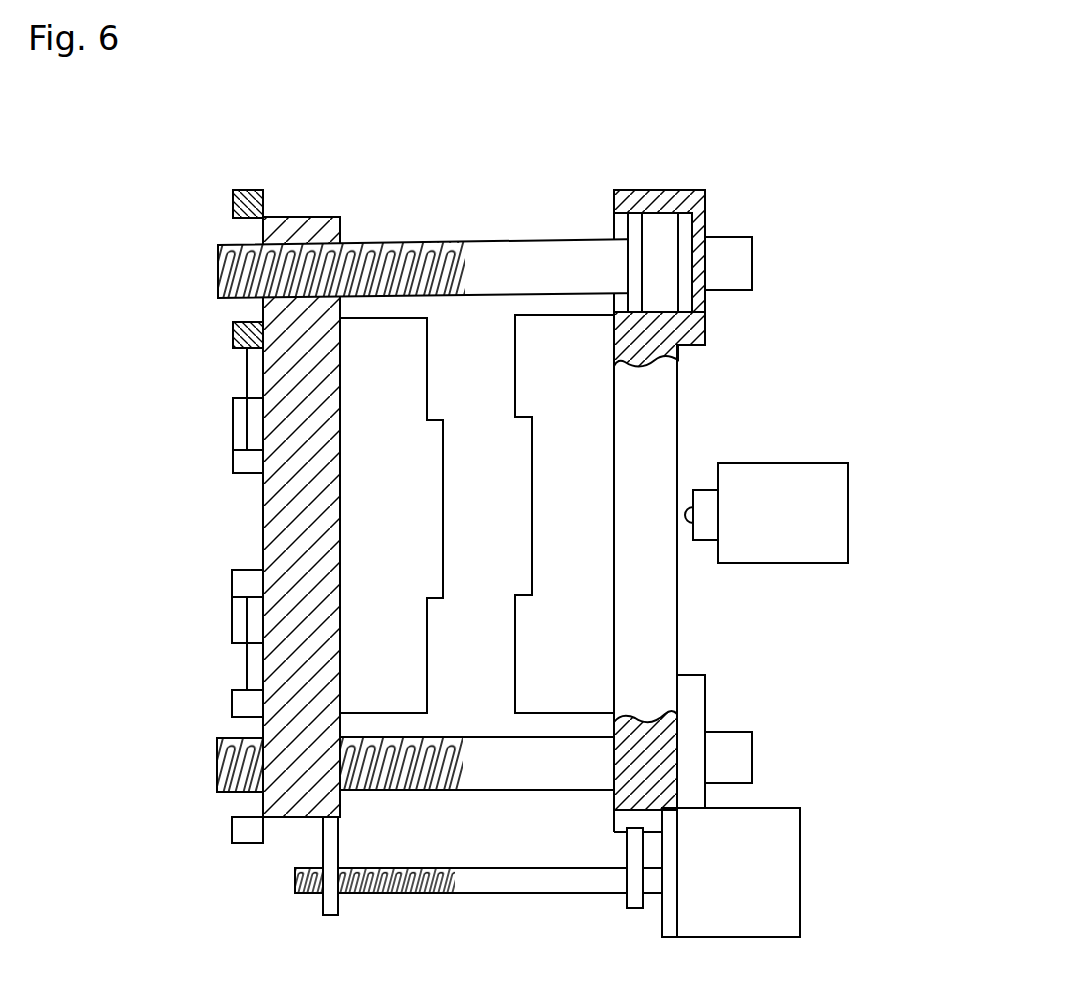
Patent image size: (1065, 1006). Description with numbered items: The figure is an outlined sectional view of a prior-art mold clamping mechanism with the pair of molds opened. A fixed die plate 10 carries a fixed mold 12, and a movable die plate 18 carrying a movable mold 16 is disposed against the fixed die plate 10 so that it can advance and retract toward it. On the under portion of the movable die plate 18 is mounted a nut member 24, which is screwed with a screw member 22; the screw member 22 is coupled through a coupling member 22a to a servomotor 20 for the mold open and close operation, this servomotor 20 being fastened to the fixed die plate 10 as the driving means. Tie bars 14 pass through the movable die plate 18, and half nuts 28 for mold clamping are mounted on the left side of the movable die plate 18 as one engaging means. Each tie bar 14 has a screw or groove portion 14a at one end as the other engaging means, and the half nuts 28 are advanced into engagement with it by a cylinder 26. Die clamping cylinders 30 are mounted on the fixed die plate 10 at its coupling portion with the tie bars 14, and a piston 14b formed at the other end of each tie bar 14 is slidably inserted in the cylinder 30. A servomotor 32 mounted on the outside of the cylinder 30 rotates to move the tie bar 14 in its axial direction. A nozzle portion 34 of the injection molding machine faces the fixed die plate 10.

The fixed die plate 10 is at (668, 630).
The fixed mold 12 is at (575, 325).
The tie bar 14 is at (500, 252).
The screw or groove portion 14a is at (227, 275).
The piston 14b is at (660, 225).
The movable mold 16 is at (387, 327).
The movable die plate 18 is at (305, 217).
The servomotor 20 is at (795, 873).
The screw member 22 is at (437, 893).
The coupling member 22a is at (633, 908).
The nut member 24 is at (330, 903).
The cylinder 26 is at (233, 462).
The half nut 28 is at (233, 337).
The die clamping cylinder 30 is at (708, 191).
The servomotor 32 is at (754, 262).
The nozzle portion 34 is at (840, 517).